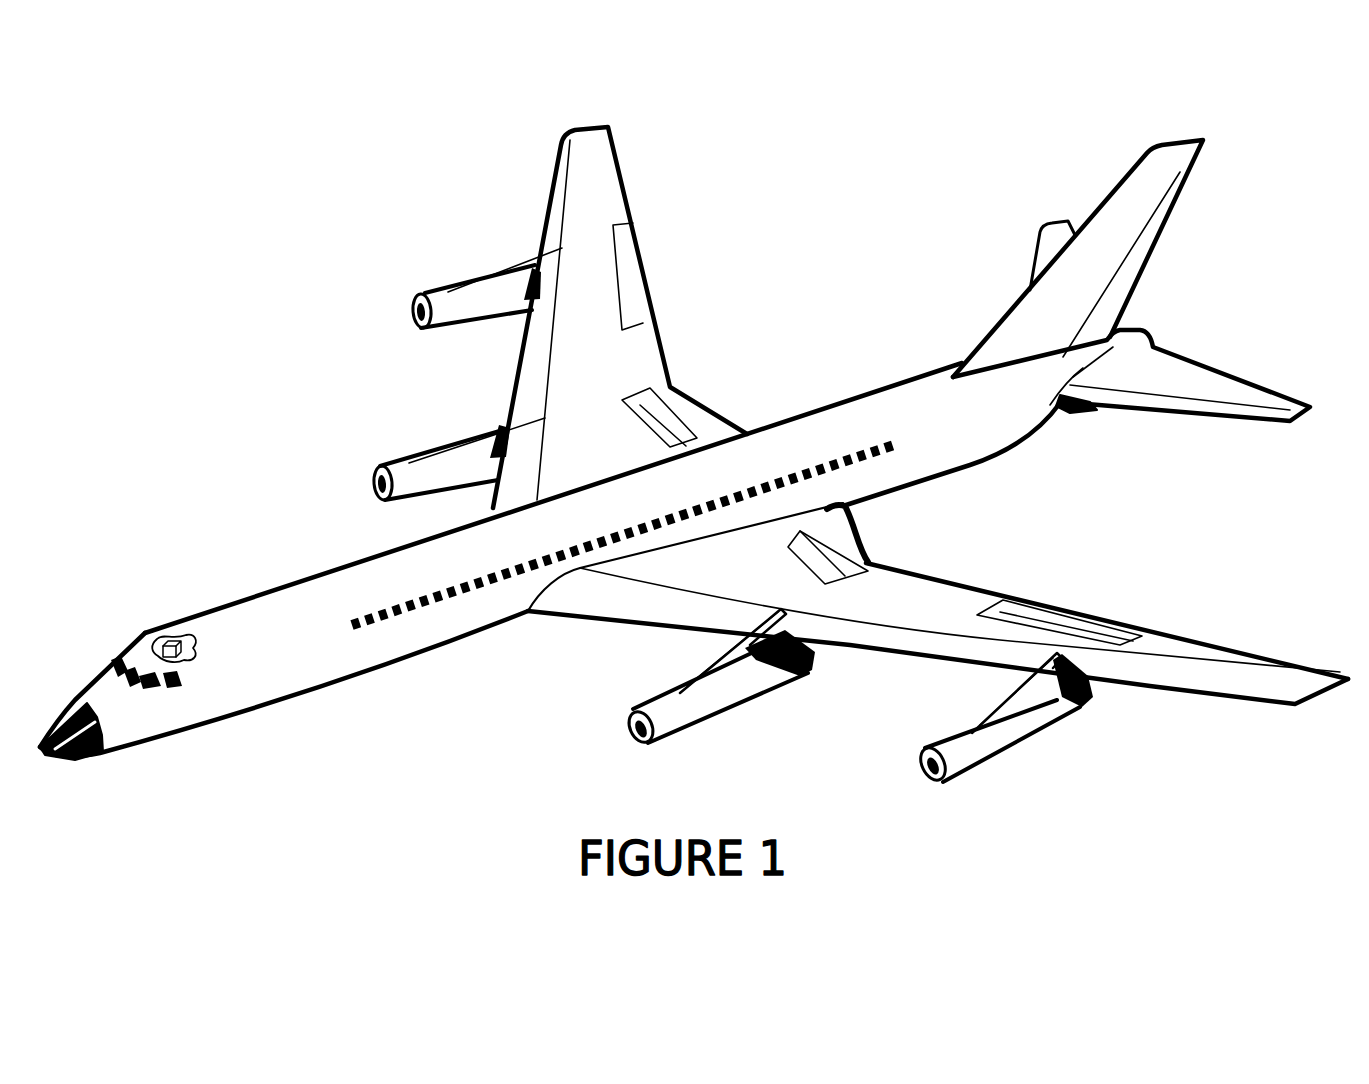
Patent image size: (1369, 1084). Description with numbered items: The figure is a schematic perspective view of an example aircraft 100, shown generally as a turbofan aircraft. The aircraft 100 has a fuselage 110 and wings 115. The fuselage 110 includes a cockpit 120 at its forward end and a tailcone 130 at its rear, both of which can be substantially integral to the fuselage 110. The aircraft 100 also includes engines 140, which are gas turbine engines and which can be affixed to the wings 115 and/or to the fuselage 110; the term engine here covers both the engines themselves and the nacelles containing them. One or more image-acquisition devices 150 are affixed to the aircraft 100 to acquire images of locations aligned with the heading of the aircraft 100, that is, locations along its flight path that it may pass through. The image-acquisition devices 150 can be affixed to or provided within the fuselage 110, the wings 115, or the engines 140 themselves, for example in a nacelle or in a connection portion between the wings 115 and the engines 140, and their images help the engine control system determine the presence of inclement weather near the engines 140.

The aircraft 100 is at (136, 235).
The fuselage 110 is at (435, 699).
The wings 115 is at (627, 222).
The cockpit 120 is at (110, 641).
The tailcone 130 is at (1104, 419).
The engines 140 is at (427, 410).
The image-acquisition devices 150 is at (168, 633).